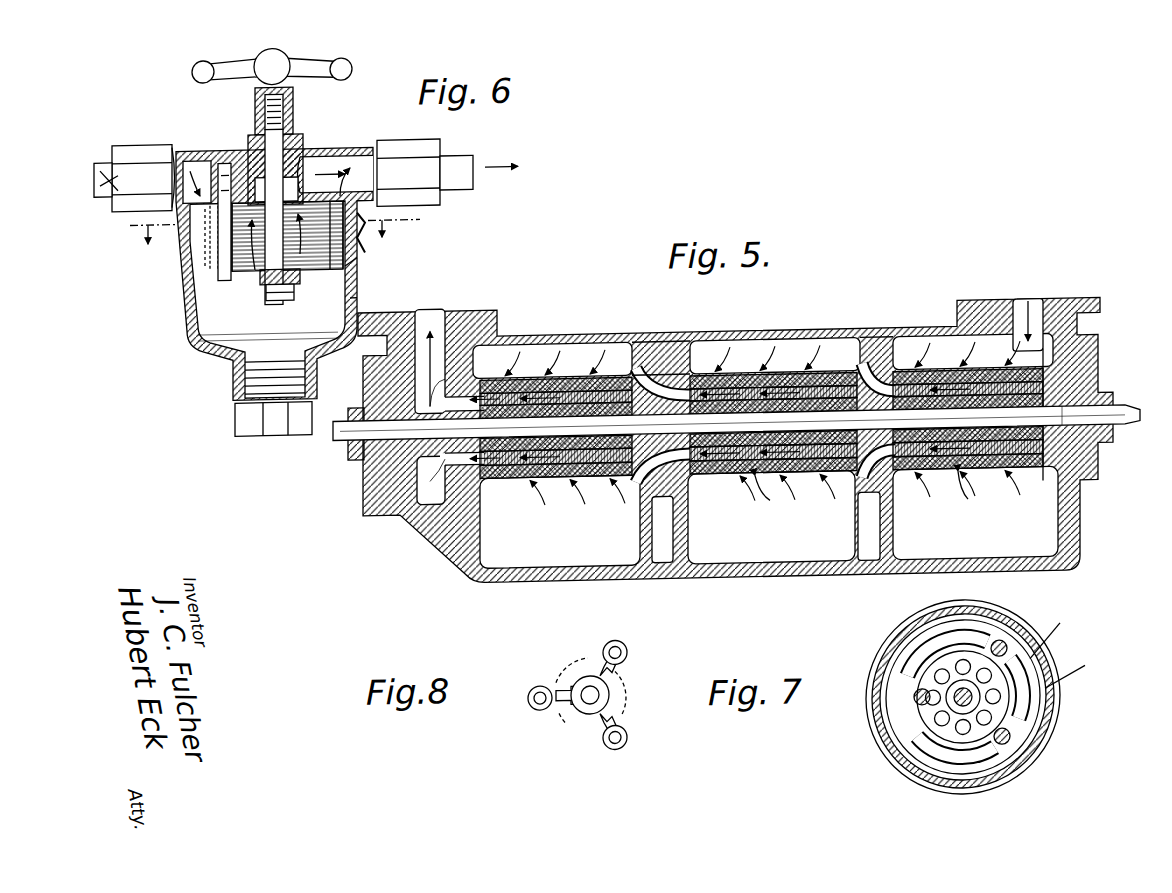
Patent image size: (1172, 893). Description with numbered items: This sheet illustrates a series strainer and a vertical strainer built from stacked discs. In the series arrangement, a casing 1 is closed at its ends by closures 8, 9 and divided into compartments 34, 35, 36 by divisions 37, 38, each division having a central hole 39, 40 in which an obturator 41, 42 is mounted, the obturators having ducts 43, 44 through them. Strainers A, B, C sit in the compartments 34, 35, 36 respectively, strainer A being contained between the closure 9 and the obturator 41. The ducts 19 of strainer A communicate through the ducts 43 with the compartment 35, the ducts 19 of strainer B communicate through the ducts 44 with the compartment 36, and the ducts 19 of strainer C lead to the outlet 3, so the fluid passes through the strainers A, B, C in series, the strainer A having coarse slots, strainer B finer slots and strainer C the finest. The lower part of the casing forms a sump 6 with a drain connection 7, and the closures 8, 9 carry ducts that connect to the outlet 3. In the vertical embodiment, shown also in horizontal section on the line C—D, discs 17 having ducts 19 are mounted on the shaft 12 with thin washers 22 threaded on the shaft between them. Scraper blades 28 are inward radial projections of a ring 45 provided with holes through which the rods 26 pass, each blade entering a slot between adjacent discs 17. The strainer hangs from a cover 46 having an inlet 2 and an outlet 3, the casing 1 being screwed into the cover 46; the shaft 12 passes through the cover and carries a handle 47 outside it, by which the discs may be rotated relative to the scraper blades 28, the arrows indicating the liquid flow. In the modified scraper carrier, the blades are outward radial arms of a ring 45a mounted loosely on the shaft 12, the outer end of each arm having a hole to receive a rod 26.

In FIG. 6, the casing 1 is at (352, 300).
In FIG. 5, the casing 1 is at (768, 335).
In FIG. 7, the casing 1 is at (882, 637).
In FIG. 6, the inlet 2 is at (130, 150).
In FIG. 5, the inlet 2 is at (1040, 325).
In FIG. 6, the outlet 3 is at (458, 163).
In FIG. 5, the outlet 3 is at (440, 320).
In FIG. 6, the sump 6 is at (245, 328).
In FIG. 6, the drain connection 7 is at (240, 421).
In FIG. 5, the closure 8 is at (380, 386).
In FIG. 5, the closure 9 is at (1098, 388).
In FIG. 6, the shaft 12 is at (288, 262).
In FIG. 5, the shaft 12 is at (345, 440).
In FIG. 7, the shaft 12 is at (956, 702).
In FIG. 8, the shaft 12 is at (584, 700).
In FIG. 6, the discs 17 is at (360, 262).
In FIG. 7, the discs 17 is at (955, 660).
In FIG. 8, the discs 17 is at (620, 675).
In FIG. 6, the ducts 19 is at (245, 185).
In FIG. 5, the ducts 19 is at (585, 395).
In FIG. 7, the ducts 19 is at (925, 680).
In FIG. 6, the washers 22 is at (262, 268).
In FIG. 6, the rods 26 is at (216, 255).
In FIG. 7, the rods 26 is at (1003, 646).
In FIG. 8, the rods 26 is at (618, 650).
In FIG. 6, the scraper blades 28 is at (208, 228).
In FIG. 7, the scraper blades 28 is at (1020, 705).
In FIG. 5, the compartment 34 is at (964, 502).
In FIG. 5, the compartment 35 is at (766, 501).
In FIG. 5, the compartment 36 is at (520, 479).
In FIG. 5, the division 37 is at (858, 536).
In FIG. 5, the division 38 is at (652, 538).
In FIG. 5, the central hole 39 is at (905, 479).
In FIG. 5, the central hole 40 is at (705, 479).
In FIG. 5, the obturator 41 is at (866, 373).
In FIG. 5, the obturator 42 is at (662, 362).
In FIG. 5, the ducts 43 is at (878, 357).
In FIG. 5, the ducts 44 is at (665, 372).
In FIG. 6, the ring 45 is at (366, 240).
In FIG. 7, the ring 45 is at (1074, 666).
In FIG. 8, the ring 45a is at (616, 700).
In FIG. 6, the cover 46 is at (356, 150).
In FIG. 7, the cover 46 is at (1058, 630).
In FIG. 6, the handle 47 is at (352, 71).
In FIG. 5, the strainer A is at (935, 367).
In FIG. 5, the strainer B is at (785, 362).
In FIG. 6, the strainer C is at (144, 230).
In FIG. 5, the strainer C is at (542, 378).
In FIG. 6, the section line D is at (400, 222).